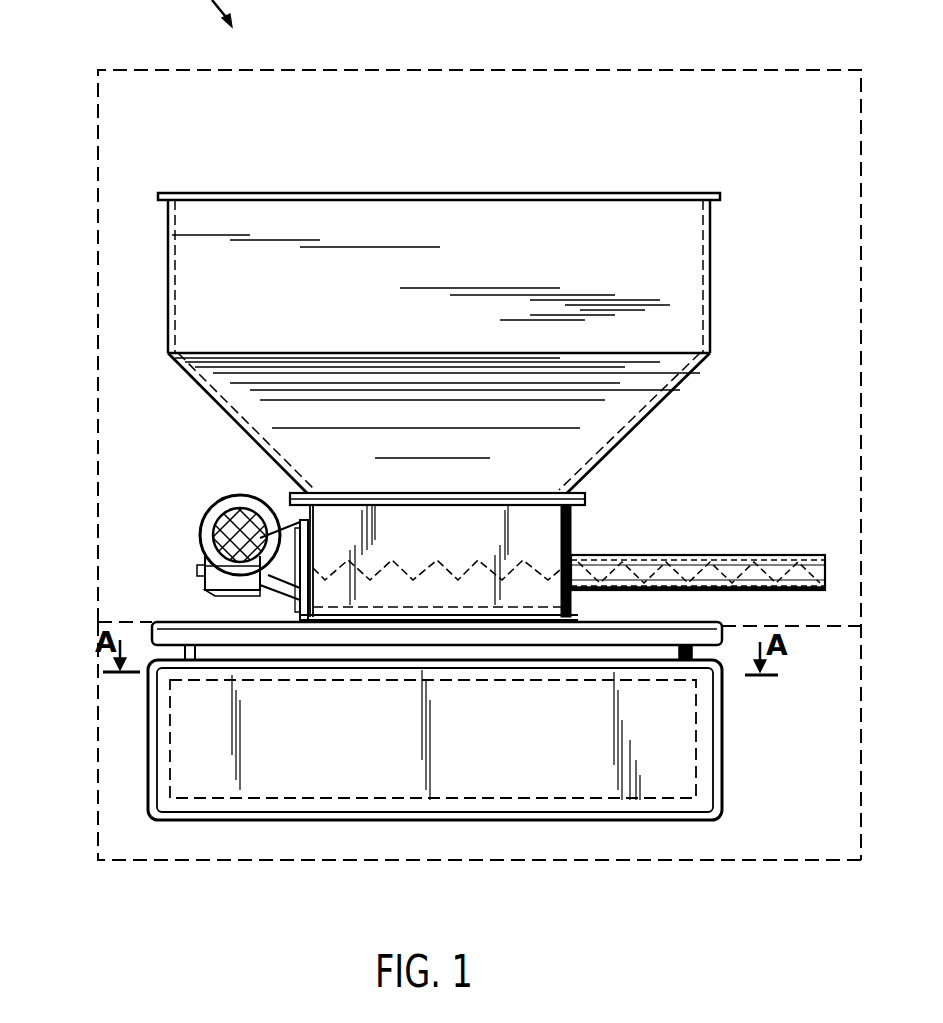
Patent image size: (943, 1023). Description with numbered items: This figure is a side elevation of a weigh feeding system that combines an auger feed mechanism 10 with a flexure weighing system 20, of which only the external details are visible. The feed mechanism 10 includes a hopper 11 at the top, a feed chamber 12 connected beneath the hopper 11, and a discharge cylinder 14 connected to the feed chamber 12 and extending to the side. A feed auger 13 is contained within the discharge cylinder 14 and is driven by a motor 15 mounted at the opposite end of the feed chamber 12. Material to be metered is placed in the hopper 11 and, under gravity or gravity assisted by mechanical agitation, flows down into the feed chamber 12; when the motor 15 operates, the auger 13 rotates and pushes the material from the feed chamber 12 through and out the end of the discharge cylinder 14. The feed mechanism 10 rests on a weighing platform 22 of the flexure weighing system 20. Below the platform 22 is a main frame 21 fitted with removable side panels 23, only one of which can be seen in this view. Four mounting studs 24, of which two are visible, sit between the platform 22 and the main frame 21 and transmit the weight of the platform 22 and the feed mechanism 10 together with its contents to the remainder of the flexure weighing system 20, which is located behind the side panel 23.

The auger feed mechanism 10 is at (306, 72).
The hopper 11 is at (711, 293).
The feed chamber 12 is at (572, 537).
The feed auger 13 is at (438, 562).
The discharge cylinder 14 is at (722, 556).
The motor 15 is at (214, 508).
The flexure weighing system 20 is at (160, 862).
The main frame 21 is at (150, 758).
The weighing platform 22 is at (166, 622).
The removable side panels 23 is at (465, 783).
The mounting studs 24 is at (182, 650).